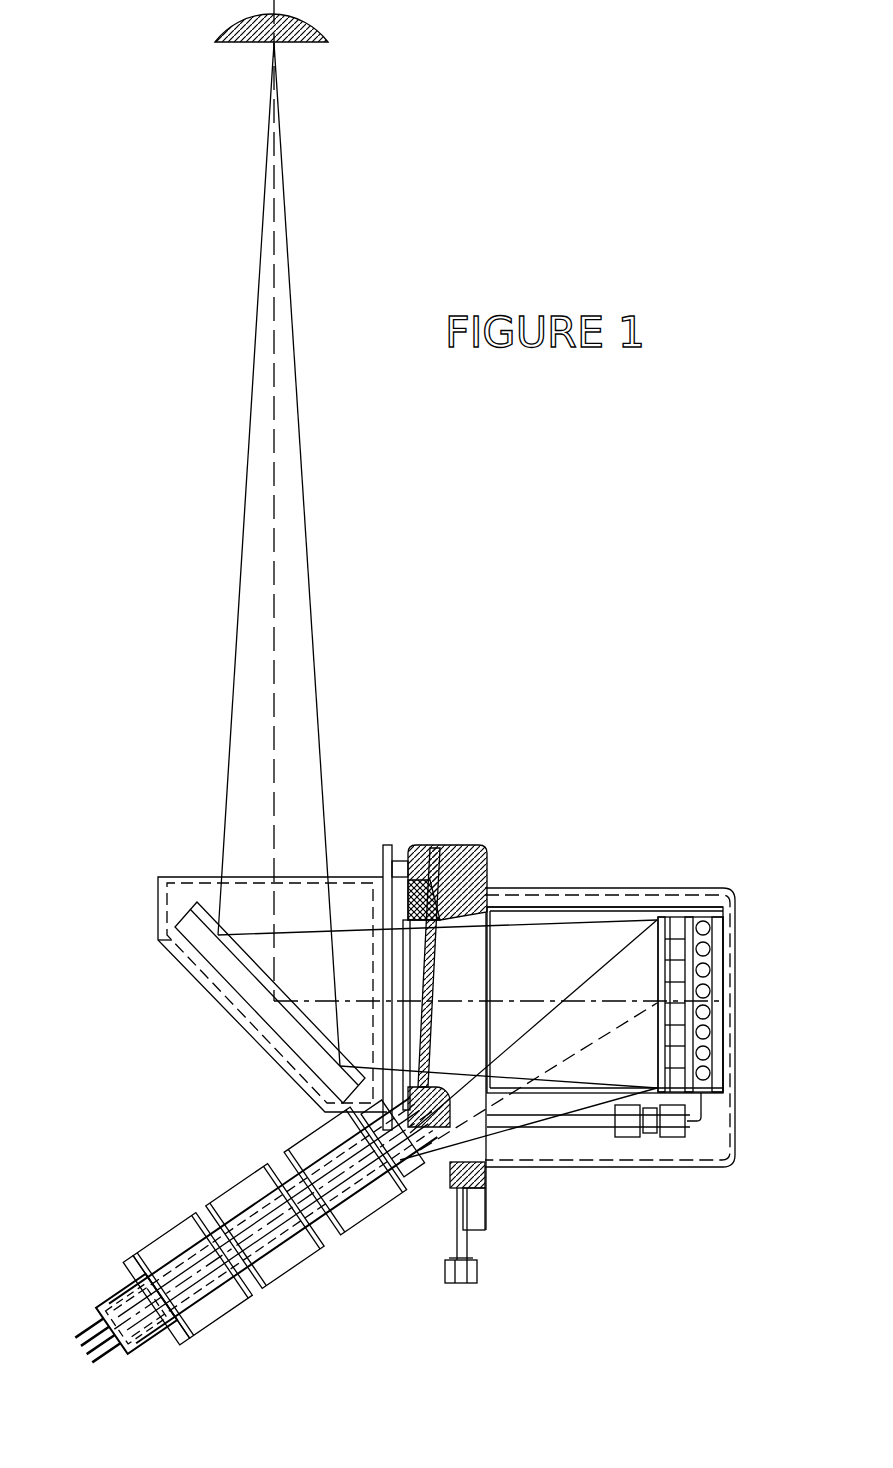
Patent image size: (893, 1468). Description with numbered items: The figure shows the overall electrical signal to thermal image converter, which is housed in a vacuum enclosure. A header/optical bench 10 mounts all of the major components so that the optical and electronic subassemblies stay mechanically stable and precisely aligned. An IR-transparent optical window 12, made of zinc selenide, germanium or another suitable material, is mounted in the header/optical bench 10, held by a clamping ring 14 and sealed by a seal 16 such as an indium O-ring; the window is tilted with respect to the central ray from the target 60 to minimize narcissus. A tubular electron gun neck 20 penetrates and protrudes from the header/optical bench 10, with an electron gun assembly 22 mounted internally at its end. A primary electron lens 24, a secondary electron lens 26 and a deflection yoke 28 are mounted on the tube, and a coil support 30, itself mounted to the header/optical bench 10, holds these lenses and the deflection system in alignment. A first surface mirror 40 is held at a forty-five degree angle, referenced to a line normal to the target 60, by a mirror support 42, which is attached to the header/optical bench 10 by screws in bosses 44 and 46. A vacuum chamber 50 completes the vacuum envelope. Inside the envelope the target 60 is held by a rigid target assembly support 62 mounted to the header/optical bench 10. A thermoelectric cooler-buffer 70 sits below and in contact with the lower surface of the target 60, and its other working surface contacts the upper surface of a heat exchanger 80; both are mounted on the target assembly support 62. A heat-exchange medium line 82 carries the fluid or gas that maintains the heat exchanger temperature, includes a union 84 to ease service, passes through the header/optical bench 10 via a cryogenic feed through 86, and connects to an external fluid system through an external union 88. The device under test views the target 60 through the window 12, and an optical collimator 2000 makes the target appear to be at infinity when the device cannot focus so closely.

The optical collimator 2000 is at (318, 37).
The header/optical bench 10 is at (473, 855).
The IR-transparent optical window 12 is at (425, 985).
The clamping ring 14 is at (385, 880).
The seal 16 is at (443, 913).
The electron gun neck 20 is at (120, 1300).
The electron gun assembly 22 is at (147, 1300).
The primary electron lens 24 is at (190, 1233).
The secondary electron lens 26 is at (253, 1197).
The deflection yoke 28 is at (333, 1148).
The coil support 30 is at (148, 1257).
The first surface mirror 40 is at (188, 917).
The mirror support 42 is at (178, 912).
The boss 44 is at (387, 1133).
The boss 46 is at (400, 865).
The vacuum chamber 50 is at (597, 893).
The target 60 is at (653, 920).
The target assembly support 62 is at (520, 908).
The thermoelectric cooler-buffer 70 is at (678, 920).
The heat exchanger 80 is at (730, 903).
The heat-exchange medium line 82 is at (590, 1120).
The union 84 is at (672, 1136).
The cryogenic feed through 86 is at (485, 1190).
The external union 88 is at (477, 1278).